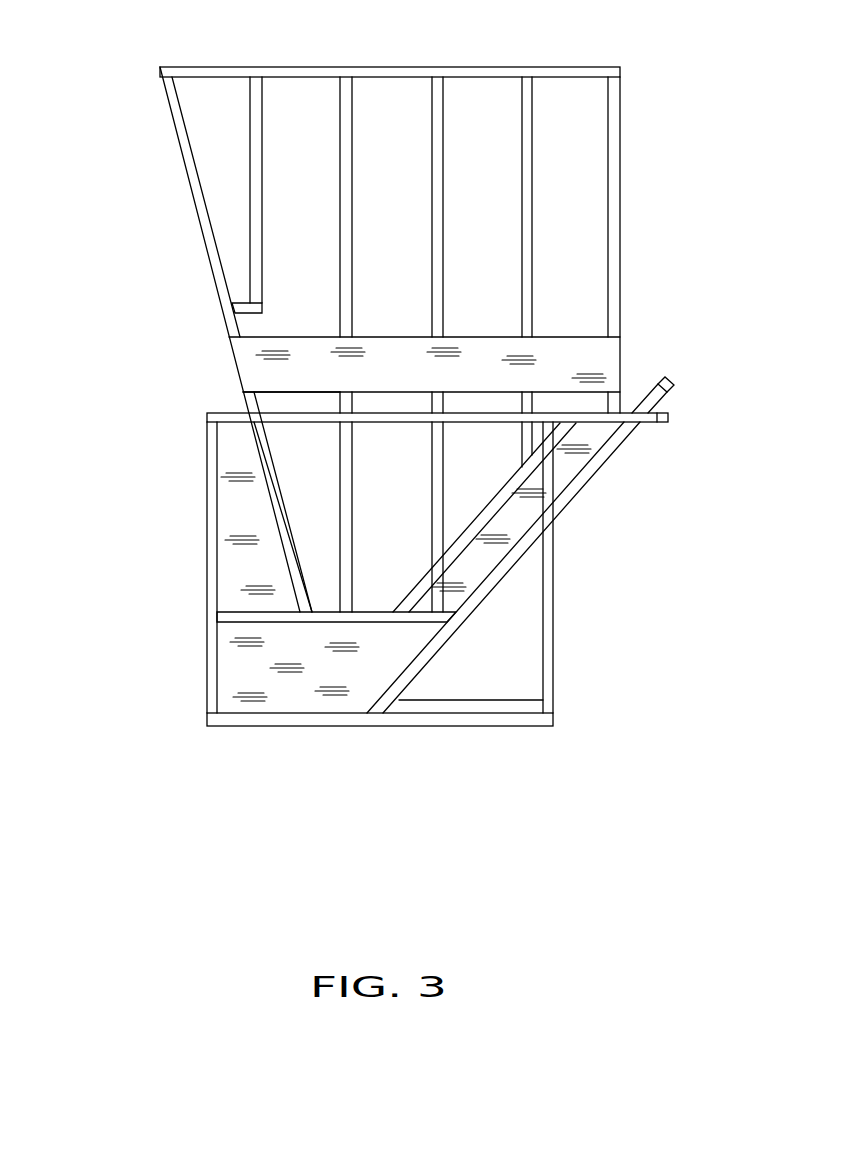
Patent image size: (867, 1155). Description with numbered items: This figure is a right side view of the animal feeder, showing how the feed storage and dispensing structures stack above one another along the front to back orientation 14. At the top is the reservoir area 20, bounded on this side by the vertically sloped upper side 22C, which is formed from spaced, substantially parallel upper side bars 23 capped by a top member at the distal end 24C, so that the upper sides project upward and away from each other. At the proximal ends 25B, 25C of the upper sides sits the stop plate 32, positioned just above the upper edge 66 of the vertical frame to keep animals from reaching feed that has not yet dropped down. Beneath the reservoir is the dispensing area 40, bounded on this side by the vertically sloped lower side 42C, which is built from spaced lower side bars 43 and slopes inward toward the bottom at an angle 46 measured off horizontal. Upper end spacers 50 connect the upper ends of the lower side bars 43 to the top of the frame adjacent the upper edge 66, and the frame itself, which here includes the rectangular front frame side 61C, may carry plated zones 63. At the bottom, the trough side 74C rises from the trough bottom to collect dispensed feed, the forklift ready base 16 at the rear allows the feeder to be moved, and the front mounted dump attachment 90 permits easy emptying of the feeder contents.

The front to back orientation 14 is at (255, 872).
The forklift ready base 16 is at (523, 700).
The reservoir area 20 is at (208, 198).
The vertically sloped upper side 22C is at (225, 142).
The upper side bars 23 is at (445, 100).
The distal end 24C is at (380, 67).
The proximal end 25B is at (247, 401).
The proximal end 25C is at (530, 403).
The stop plate 32 is at (372, 347).
The dispensing area 40 is at (283, 482).
The vertically sloped lower side 42C is at (313, 502).
The lower side bars 43 is at (530, 435).
The angle 46 is at (452, 641).
The upper end spacers 50 is at (232, 408).
The front frame side 61C is at (207, 457).
The plated zones 63 is at (528, 513).
The upper edge 66 is at (207, 412).
The trough side 74C is at (305, 692).
The dump attachment 90 is at (192, 694).